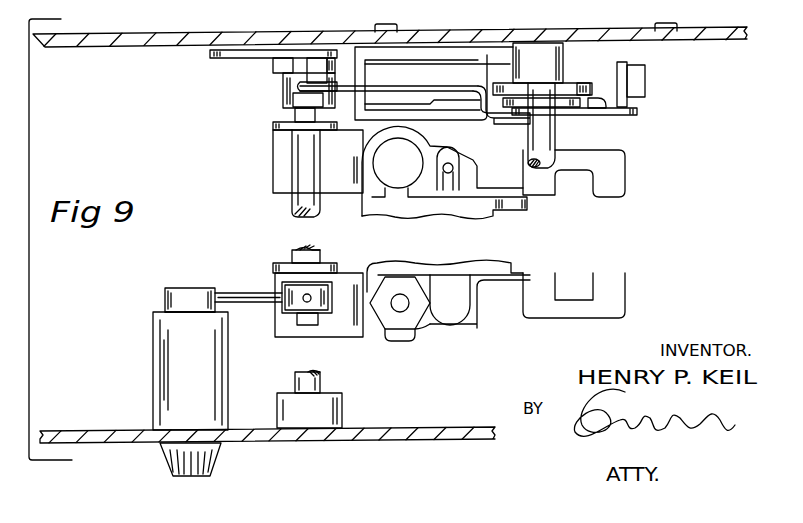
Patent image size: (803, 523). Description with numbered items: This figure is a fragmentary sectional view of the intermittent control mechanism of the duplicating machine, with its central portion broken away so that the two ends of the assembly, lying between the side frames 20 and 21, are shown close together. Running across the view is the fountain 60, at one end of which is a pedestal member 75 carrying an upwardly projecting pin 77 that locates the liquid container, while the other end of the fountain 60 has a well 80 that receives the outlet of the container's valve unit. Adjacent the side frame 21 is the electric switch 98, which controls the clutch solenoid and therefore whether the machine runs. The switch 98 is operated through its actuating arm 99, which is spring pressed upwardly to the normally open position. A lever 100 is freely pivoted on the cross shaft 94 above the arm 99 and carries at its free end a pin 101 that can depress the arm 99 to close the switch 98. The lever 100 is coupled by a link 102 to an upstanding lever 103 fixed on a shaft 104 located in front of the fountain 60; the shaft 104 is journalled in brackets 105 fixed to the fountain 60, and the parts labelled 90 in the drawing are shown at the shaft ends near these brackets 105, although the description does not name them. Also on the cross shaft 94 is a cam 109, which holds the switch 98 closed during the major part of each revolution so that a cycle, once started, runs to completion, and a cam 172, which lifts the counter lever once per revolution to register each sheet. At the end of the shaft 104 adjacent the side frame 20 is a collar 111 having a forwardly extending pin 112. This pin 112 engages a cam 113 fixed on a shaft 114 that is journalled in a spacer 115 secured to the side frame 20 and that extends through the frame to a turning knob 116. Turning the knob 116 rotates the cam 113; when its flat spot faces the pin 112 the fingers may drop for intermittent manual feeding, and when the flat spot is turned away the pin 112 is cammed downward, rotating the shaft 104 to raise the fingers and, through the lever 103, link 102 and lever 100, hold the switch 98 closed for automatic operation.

The side frame 20 is at (318, 433).
The side frame 21 is at (358, 33).
The fountain 60 is at (368, 210).
The pedestal member 75 is at (400, 309).
The pin 77 is at (400, 303).
The well 80 is at (400, 152).
The pin 90 is at (303, 96).
The cross shaft 94 is at (552, 142).
The electric switch 98 is at (444, 59).
The actuating arm 99 is at (645, 81).
The lever 100 is at (630, 111).
The pin 101 is at (632, 100).
The link 102 is at (513, 124).
The upstanding lever 103 is at (242, 58).
The shaft 104 is at (318, 250).
The brackets 105 is at (282, 171).
The cam 109 is at (570, 100).
The collar 111 is at (322, 313).
The pin 112 is at (253, 293).
The cam 113 is at (185, 296).
The shaft 114 is at (200, 313).
The spacer 115 is at (160, 367).
The turning knob 116 is at (212, 466).
The cam 172 is at (592, 83).